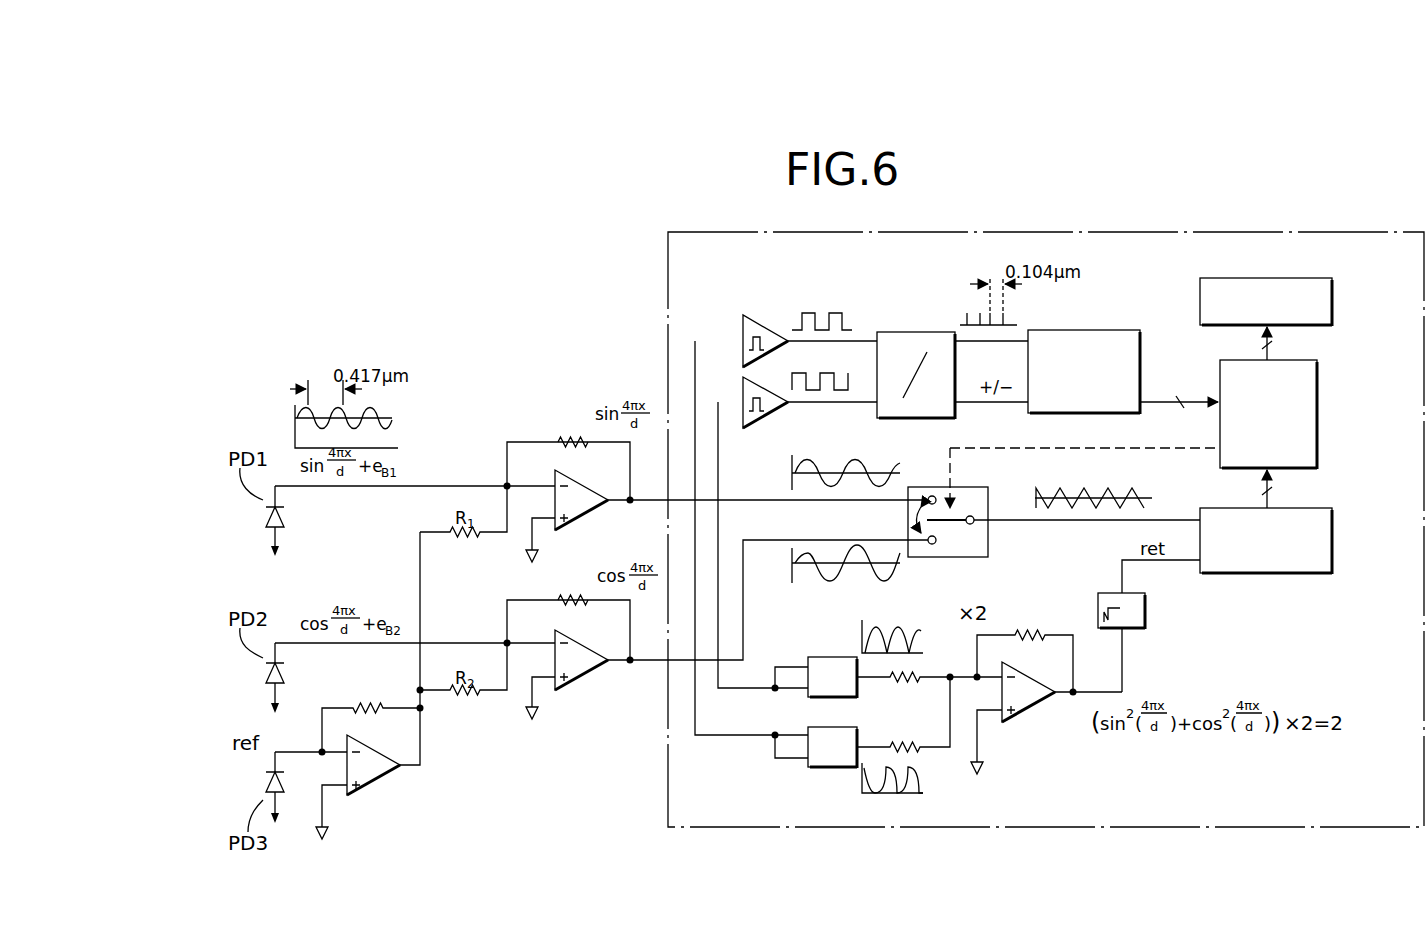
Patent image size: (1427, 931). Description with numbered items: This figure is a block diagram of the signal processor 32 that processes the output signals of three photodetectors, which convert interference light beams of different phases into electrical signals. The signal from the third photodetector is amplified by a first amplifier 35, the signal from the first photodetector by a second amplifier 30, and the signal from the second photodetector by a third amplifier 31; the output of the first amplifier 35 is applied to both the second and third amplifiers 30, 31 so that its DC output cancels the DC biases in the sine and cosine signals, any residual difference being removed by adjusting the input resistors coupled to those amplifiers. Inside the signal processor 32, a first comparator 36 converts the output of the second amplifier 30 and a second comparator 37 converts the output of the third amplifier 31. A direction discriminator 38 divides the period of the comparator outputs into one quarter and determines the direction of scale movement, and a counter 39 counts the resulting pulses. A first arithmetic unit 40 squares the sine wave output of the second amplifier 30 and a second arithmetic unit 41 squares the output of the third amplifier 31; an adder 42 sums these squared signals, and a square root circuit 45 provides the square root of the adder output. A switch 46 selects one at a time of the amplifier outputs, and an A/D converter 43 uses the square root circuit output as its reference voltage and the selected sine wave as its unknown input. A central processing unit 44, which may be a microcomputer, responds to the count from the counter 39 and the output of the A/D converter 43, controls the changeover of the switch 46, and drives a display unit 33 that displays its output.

The second amplifier 30 is at (570, 440).
The third amplifier 31 is at (585, 683).
The signal processor 32 is at (1250, 230).
The display unit 33 is at (1297, 280).
The first amplifier 35 is at (427, 738).
The first comparator 36 is at (767, 421).
The second comparator 37 is at (770, 327).
The direction discriminator 38 is at (907, 338).
The counter 39 is at (1073, 333).
The first arithmetic unit 40 is at (832, 657).
The second arithmetic unit 41 is at (835, 767).
The adder 42 is at (1030, 630).
The A/D converter 43 is at (1327, 540).
The central processing unit 44 is at (1313, 408).
The square root circuit 45 is at (1145, 611).
The switch 46 is at (965, 558).